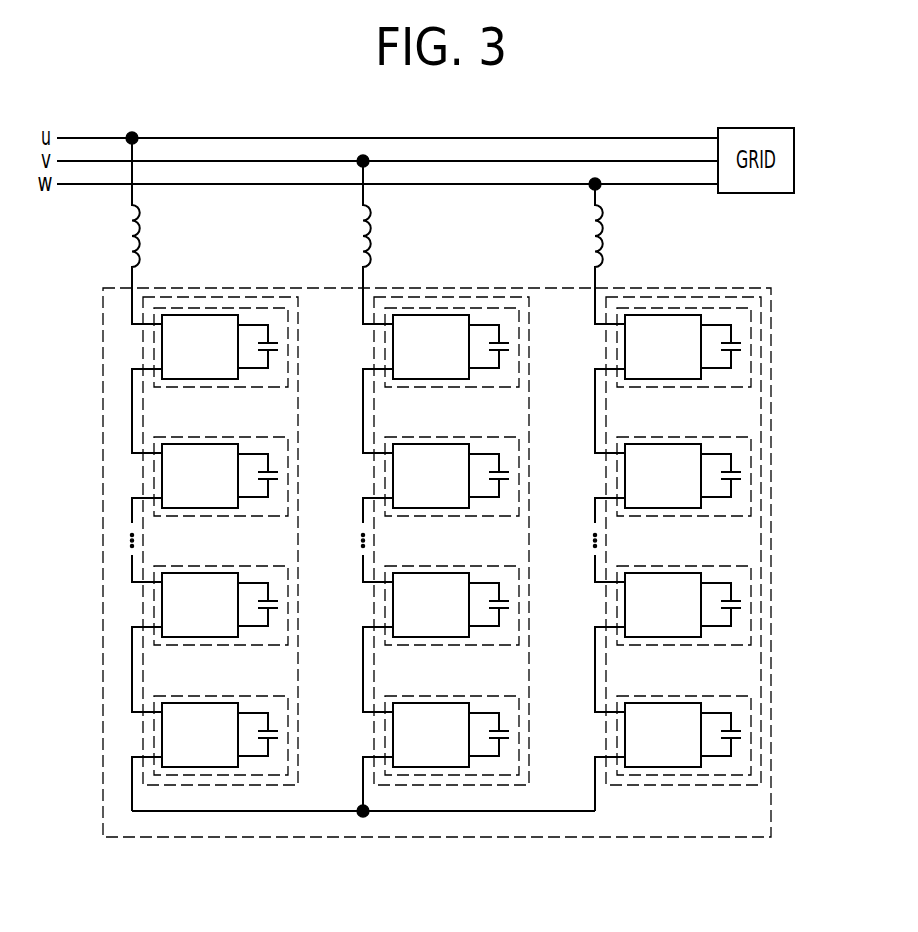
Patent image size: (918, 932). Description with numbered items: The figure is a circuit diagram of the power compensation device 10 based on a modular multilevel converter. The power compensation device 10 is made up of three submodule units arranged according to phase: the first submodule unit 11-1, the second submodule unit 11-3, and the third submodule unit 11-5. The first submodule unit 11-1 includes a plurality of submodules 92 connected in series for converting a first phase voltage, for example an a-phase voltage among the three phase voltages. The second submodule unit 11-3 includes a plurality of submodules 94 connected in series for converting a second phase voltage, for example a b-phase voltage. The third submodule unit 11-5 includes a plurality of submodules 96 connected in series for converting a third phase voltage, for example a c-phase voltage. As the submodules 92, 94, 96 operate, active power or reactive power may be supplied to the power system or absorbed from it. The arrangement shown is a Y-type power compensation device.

The power compensation device 10 is at (465, 509).
The first submodule unit 11-1 is at (212, 509).
The second submodule unit 11-3 is at (443, 521).
The third submodule unit 11-5 is at (675, 532).
The submodule 92 is at (177, 767).
The submodule 94 is at (408, 767).
The submodule 96 is at (640, 767).